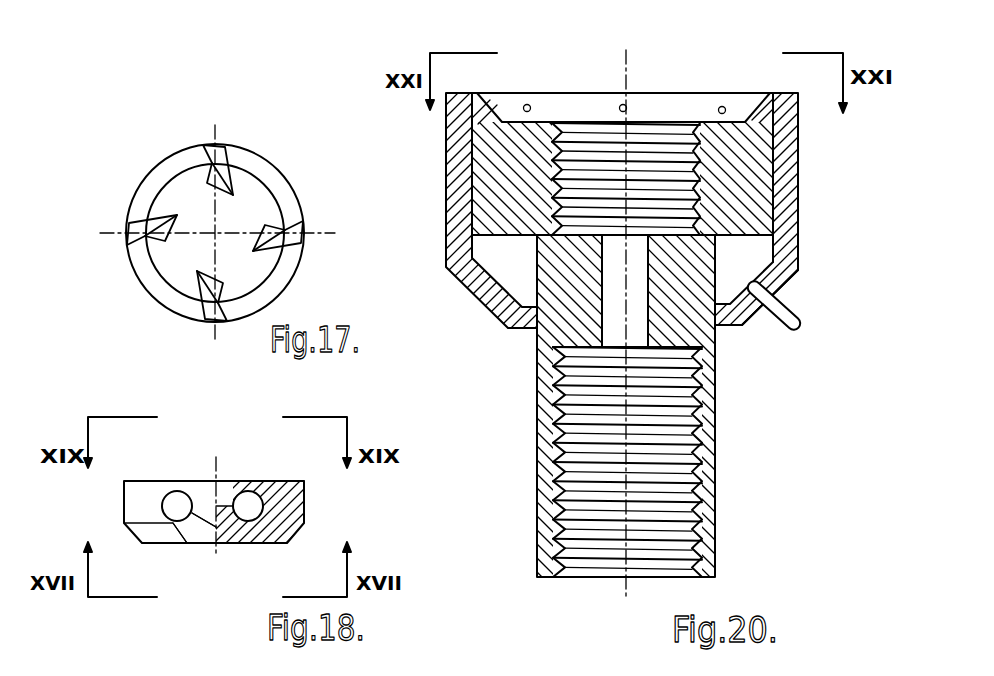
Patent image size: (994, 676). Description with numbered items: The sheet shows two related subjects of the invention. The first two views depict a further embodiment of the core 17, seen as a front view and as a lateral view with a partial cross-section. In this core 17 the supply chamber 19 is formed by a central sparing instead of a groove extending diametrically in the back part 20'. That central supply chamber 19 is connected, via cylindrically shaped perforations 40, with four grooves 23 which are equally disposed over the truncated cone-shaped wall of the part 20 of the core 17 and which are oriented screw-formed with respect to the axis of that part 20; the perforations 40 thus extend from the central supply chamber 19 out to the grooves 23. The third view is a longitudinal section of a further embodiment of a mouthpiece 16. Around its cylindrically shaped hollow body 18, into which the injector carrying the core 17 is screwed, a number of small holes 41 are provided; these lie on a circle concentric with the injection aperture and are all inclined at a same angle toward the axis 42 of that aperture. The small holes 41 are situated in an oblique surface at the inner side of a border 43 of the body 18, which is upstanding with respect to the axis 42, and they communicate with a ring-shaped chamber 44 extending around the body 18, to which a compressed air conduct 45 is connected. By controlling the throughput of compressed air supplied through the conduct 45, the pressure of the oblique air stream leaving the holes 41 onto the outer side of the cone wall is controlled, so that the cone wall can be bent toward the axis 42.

In FIG. 20, the mouthpiece 16 is at (802, 197).
In FIG. 17, the core 17 is at (287, 163).
In FIG. 20, the hollow body 18 is at (555, 88).
In FIG. 18, the supply chamber 19 is at (248, 502).
In FIG. 17, the part of the core 20 is at (240, 235).
In FIG. 18, the part of the core 20 is at (231, 539).
In FIG. 18, the back part 20' is at (352, 495).
In FIG. 17, the grooves 23 is at (222, 163).
In FIG. 18, the grooves 23 is at (198, 532).
In FIG. 18, the perforations 40 is at (177, 502).
In FIG. 20, the small holes 41 is at (625, 104).
In FIG. 20, the axis 42 is at (640, 110).
In FIG. 20, the border 43 is at (753, 115).
In FIG. 20, the ring-shaped chamber 44 is at (753, 248).
In FIG. 20, the compressed air conduct 45 is at (787, 323).